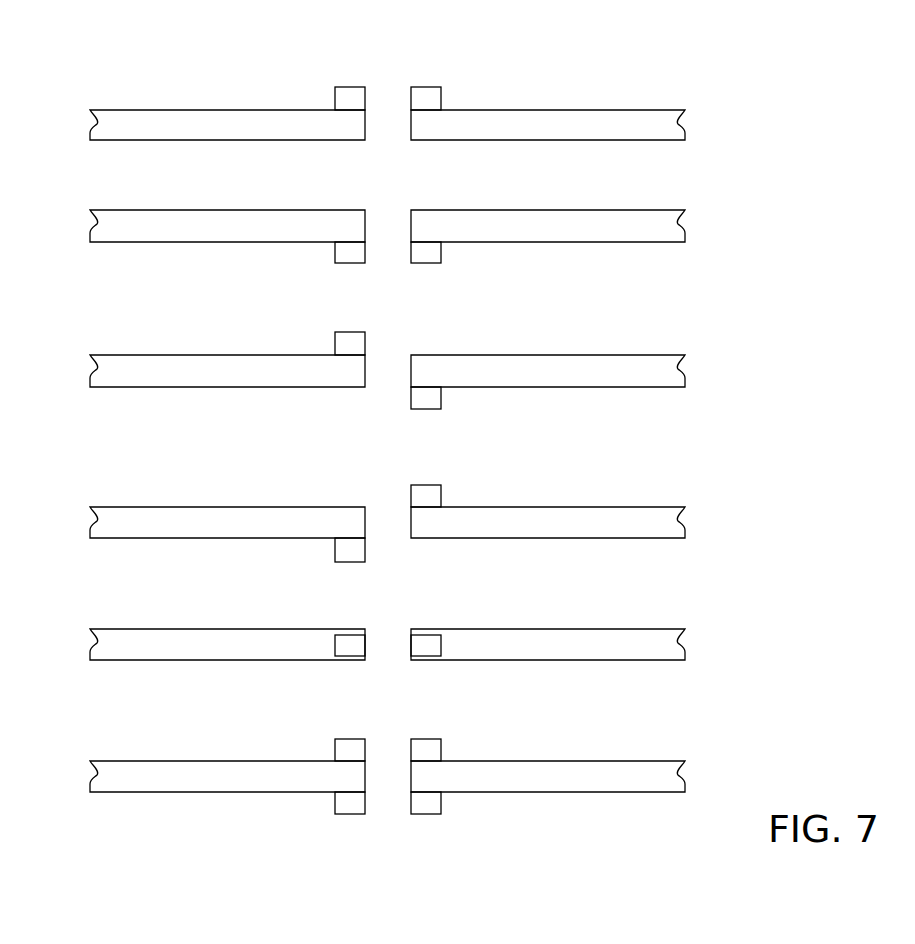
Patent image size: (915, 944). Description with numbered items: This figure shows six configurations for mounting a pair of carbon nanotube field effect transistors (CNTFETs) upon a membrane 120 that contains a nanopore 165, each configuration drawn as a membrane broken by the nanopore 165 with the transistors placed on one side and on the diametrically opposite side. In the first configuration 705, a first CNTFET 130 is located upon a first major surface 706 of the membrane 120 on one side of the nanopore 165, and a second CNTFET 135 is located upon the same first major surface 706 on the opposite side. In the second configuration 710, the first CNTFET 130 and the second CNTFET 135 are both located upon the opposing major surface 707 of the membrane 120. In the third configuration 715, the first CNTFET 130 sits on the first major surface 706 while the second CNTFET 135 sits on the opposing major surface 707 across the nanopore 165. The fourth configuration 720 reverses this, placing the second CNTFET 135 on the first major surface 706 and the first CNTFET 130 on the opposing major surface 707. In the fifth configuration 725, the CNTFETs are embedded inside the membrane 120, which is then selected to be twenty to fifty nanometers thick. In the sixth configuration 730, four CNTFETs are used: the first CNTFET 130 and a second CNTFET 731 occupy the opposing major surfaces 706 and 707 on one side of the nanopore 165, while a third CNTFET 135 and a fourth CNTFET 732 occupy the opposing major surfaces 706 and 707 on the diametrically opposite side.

The membrane 120 is at (227, 134).
The first CNTFET 130 is at (350, 87).
The second CNTFET 135 is at (425, 87).
The nanopore 165 is at (388, 87).
The first configuration 705 is at (778, 120).
The first major surface 706 is at (195, 108).
The opposing major surface 707 is at (543, 143).
The second configuration 710 is at (778, 228).
The third configuration 715 is at (778, 372).
The fourth configuration 720 is at (778, 525).
The fifth configuration 725 is at (778, 647).
The sixth configuration 730 is at (778, 772).
The second CNTFET 731 is at (352, 814).
The fourth CNTFET 732 is at (425, 814).